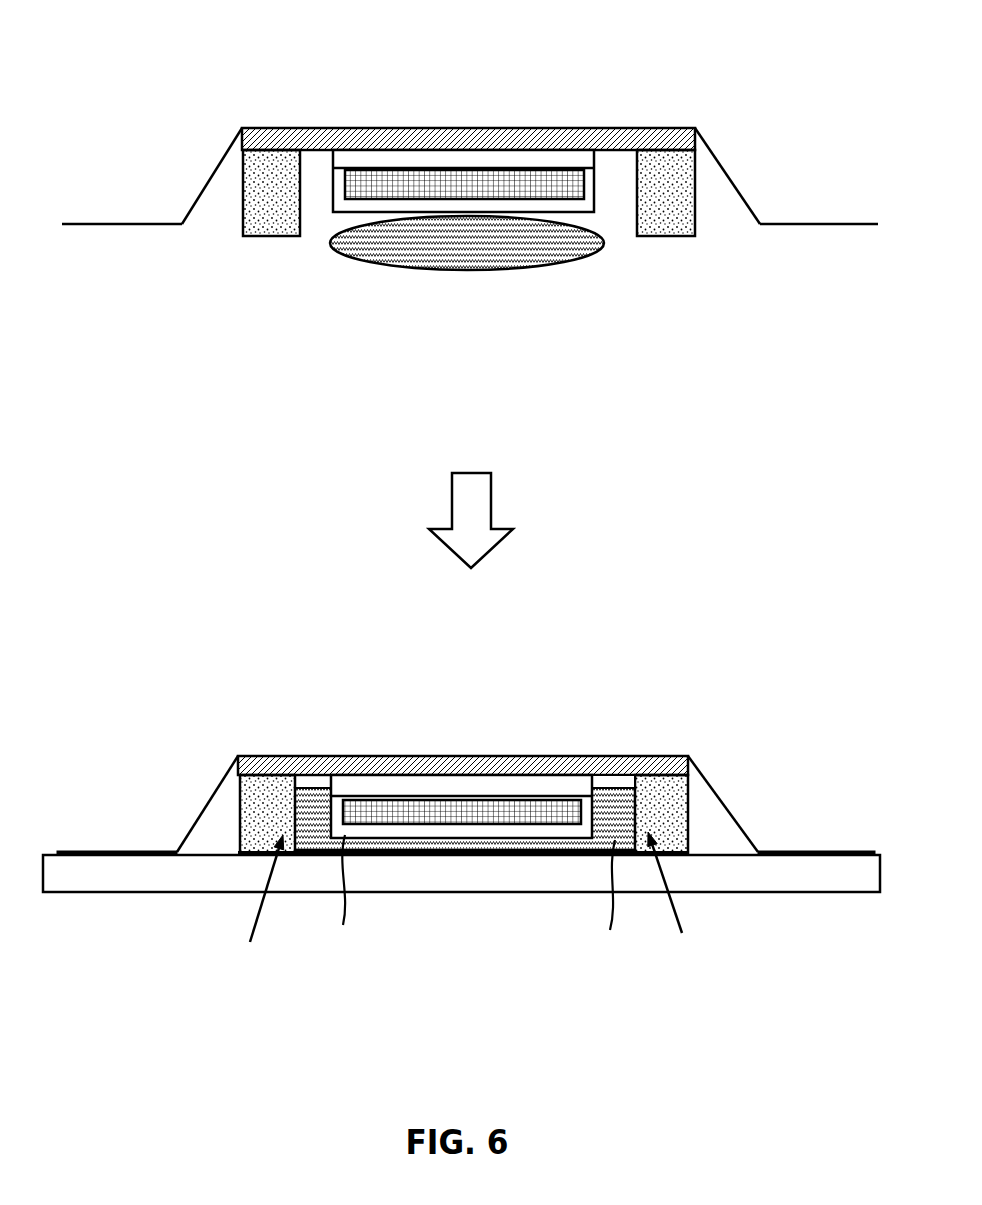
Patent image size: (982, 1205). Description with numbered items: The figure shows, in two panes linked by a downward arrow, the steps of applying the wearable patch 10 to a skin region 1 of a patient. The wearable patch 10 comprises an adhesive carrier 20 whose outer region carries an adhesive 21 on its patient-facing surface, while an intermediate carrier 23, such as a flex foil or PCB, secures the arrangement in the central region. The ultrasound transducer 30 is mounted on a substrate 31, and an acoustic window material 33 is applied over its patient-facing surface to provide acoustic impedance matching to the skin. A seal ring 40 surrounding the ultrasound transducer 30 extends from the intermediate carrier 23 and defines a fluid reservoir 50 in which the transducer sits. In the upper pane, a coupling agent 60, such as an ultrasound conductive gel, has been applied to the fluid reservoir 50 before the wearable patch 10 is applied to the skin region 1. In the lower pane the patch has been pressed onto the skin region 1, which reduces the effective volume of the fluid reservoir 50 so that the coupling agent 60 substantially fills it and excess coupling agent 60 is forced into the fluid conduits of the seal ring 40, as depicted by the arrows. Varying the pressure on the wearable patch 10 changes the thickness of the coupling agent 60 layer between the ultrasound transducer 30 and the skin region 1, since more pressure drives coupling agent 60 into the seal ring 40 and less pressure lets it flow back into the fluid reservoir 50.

The skin region 1 is at (98, 880).
The wearable patch 10 is at (467, 499).
The adhesive carrier 20 is at (137, 224).
The adhesive 21 is at (103, 224).
The intermediate carrier 23 is at (519, 135).
The ultrasound transducer 30 is at (470, 170).
The substrate 31 is at (405, 158).
The acoustic window material 33 is at (353, 203).
The seal ring 40 is at (260, 232).
The fluid reservoir 50 is at (622, 213).
The coupling agent 60 is at (472, 253).